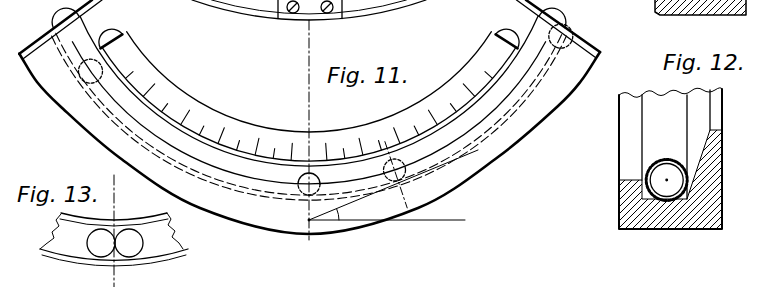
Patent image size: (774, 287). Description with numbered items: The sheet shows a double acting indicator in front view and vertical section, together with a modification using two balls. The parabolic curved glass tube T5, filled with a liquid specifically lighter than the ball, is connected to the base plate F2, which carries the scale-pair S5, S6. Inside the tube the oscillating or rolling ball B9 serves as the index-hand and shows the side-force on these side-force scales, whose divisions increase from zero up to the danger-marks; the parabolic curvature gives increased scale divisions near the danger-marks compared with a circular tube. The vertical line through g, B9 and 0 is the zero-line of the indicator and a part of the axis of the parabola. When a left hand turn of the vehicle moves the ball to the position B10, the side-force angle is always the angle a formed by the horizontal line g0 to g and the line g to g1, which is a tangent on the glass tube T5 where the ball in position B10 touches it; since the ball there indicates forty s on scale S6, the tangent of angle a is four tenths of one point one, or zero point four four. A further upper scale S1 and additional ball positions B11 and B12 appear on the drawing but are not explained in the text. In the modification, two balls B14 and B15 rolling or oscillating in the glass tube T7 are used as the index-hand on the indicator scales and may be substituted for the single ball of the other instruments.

In FIG. 11, the base plate F2 is at (538, 122).
In FIG. 12, the base plate F2 is at (716, 211).
In FIG. 11, the upper scale S1 is at (186, 5).
In FIG. 11, the side-force scale S5 is at (193, 99).
In FIG. 11, the side-force scale S6 is at (340, 129).
In FIG. 11, the oscillating or rolling ball B9 is at (320, 187).
In FIG. 11, the ball position B10 is at (404, 165).
In FIG. 11, the ball B11 is at (99, 80).
In FIG. 11, the ball B12 is at (560, 24).
In FIG. 11, the vertex of side-force angle g is at (304, 221).
In FIG. 11, the horizontal line end point g0 is at (400, 220).
In FIG. 11, the tangent end point g1 is at (404, 178).
In FIG. 11, the side-force angle a is at (349, 214).
In FIG. 12, the parabolic curved glass tube T5 is at (654, 165).
In FIG. 13, the glass tube T7 is at (66, 243).
In FIG. 13, the ball B14 is at (136, 256).
In FIG. 13, the ball B15 is at (101, 256).
In FIG. 13, the zero point 0 is at (113, 268).